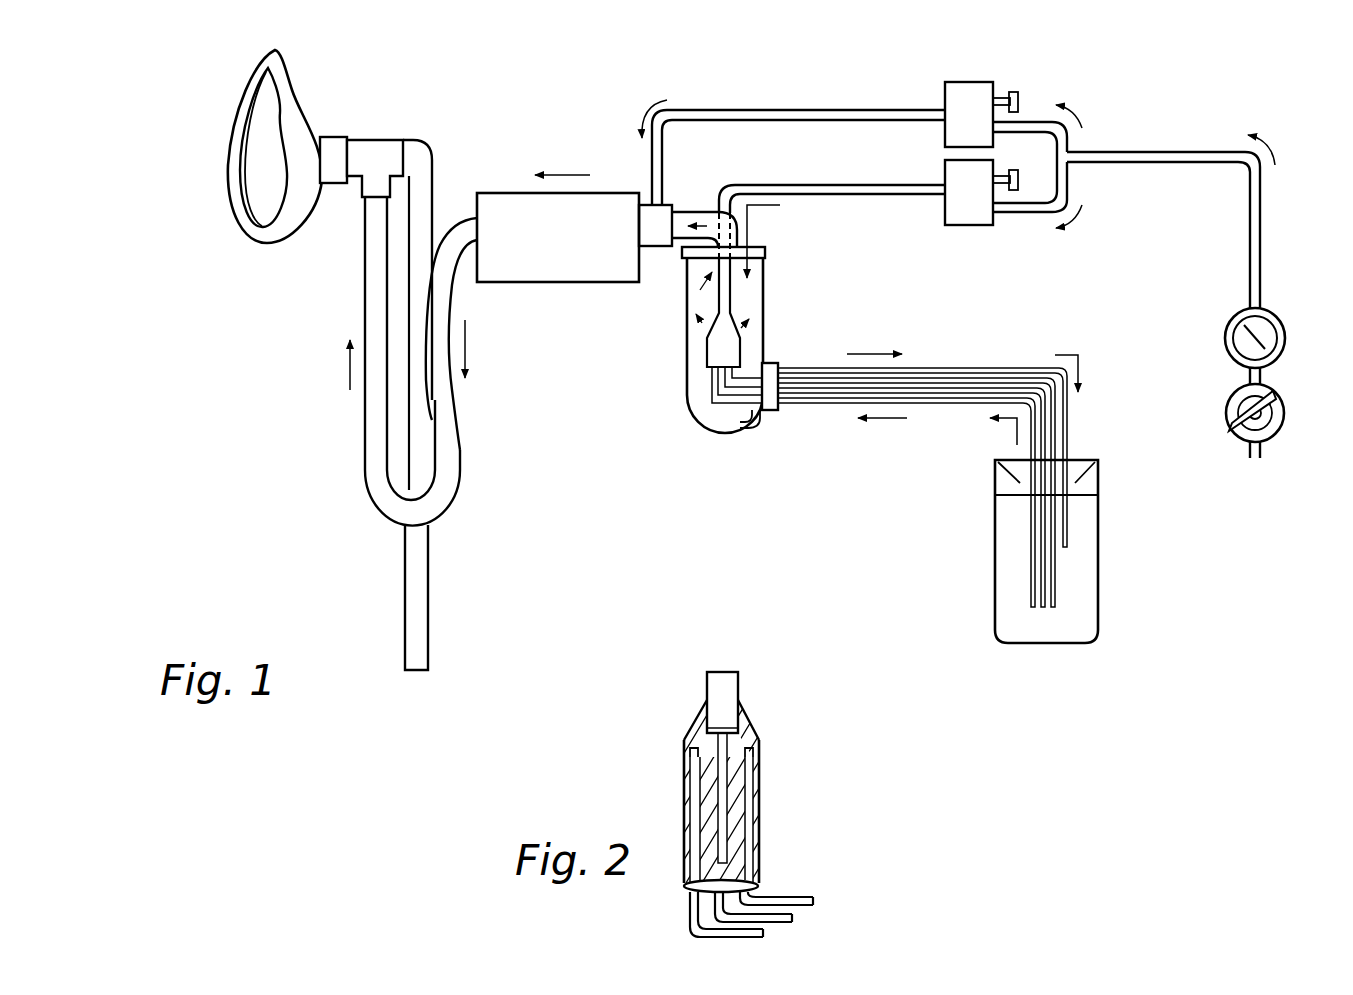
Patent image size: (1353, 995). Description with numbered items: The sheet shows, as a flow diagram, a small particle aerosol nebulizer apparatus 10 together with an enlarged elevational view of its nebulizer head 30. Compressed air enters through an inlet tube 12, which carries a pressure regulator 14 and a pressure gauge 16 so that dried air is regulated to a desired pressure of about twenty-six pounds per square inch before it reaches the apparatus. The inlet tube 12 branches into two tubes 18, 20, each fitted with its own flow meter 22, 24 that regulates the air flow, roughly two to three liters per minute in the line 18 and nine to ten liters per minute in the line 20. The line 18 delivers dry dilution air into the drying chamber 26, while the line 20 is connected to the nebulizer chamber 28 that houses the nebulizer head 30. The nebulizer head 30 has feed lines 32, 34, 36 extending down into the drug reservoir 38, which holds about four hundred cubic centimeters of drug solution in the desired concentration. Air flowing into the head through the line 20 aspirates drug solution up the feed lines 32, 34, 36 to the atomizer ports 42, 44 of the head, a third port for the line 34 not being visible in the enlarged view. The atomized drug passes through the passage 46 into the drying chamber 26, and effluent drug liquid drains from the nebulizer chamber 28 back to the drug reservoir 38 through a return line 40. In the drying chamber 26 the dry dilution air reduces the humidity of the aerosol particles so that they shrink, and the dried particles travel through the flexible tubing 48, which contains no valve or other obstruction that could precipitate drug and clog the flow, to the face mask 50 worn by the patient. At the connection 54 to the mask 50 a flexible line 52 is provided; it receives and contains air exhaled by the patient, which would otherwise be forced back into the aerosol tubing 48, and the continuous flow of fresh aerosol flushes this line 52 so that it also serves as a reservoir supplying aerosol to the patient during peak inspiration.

In FIG. 1, the aerosol nebulizer apparatus 10 is at (1152, 240).
In FIG. 1, the inlet tube 12 is at (1262, 230).
In FIG. 1, the pressure regulator 14 is at (1283, 427).
In FIG. 1, the pressure gauge 16 is at (1285, 334).
In FIG. 1, the tube 18 is at (800, 113).
In FIG. 1, the tube 20 is at (820, 188).
In FIG. 1, the flow meter 22 is at (953, 93).
In FIG. 1, the flow meter 24 is at (953, 213).
In FIG. 1, the drying chamber 26 is at (553, 285).
In FIG. 1, the nebulizer chamber 28 is at (765, 283).
In FIG. 1, the nebulizer head 30 is at (728, 352).
In FIG. 2, the nebulizer head 30 is at (760, 818).
In FIG. 1, the feed line 32 is at (790, 413).
In FIG. 1, the feed line 34 is at (818, 405).
In FIG. 1, the feed line 36 is at (838, 396).
In FIG. 1, the drug reservoir 38 is at (1098, 574).
In FIG. 1, the return line 40 is at (1068, 432).
In FIG. 2, the atomizer port 42 is at (684, 755).
In FIG. 2, the atomizer port 44 is at (763, 757).
In FIG. 1, the passage 46 is at (697, 213).
In FIG. 1, the flexible tubing 48 is at (362, 425).
In FIG. 1, the face mask 50 is at (237, 222).
In FIG. 1, the flexible line 52 is at (428, 578).
In FIG. 1, the connection 54 is at (378, 150).